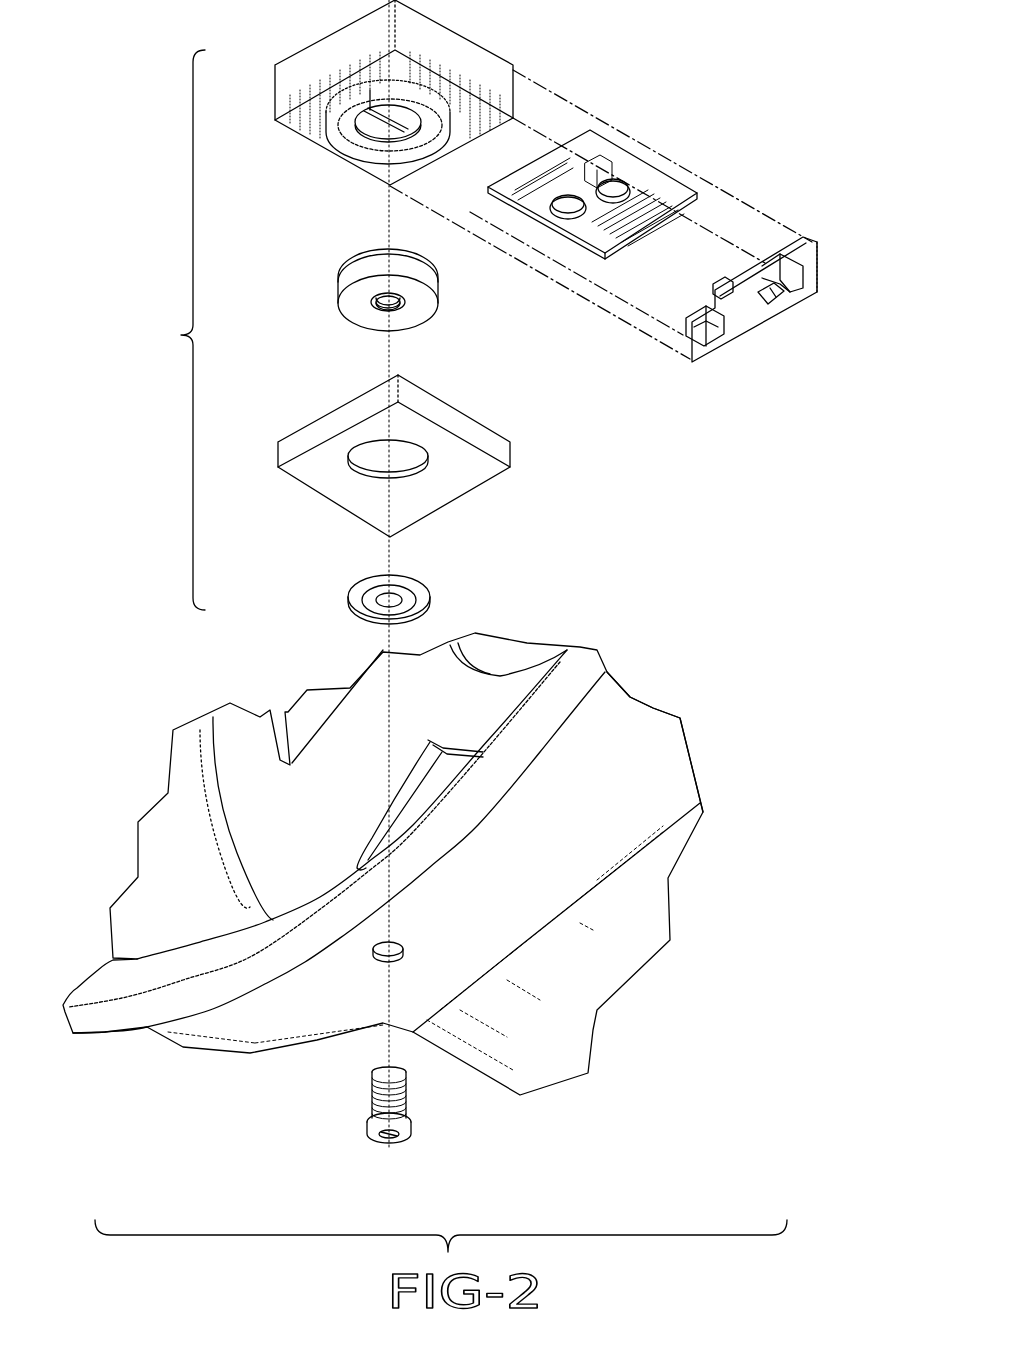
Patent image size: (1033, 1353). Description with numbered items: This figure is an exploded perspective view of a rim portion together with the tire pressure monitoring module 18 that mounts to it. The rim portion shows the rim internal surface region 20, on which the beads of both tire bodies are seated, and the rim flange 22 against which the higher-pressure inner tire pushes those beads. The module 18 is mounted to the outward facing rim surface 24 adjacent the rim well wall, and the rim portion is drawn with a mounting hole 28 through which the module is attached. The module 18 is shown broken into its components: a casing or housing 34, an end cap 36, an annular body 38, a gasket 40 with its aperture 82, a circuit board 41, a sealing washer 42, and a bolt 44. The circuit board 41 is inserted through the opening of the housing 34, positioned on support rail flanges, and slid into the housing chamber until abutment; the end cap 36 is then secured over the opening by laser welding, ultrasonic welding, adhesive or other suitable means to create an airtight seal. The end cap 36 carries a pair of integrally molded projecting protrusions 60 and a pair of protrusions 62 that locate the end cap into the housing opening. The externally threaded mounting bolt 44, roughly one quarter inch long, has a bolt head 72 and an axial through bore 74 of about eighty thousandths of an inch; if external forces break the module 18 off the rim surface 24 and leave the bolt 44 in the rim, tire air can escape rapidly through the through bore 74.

The tire pressure monitoring module 18 is at (172, 333).
The rim internal surface region 20 is at (585, 897).
The rim flange 22 is at (577, 675).
The outward facing rim surface 24 is at (630, 745).
The mounting hole 28 is at (400, 957).
The housing 34 is at (332, 46).
The end cap 36 is at (757, 323).
The annular body 38 is at (413, 312).
The gasket 40 is at (350, 412).
The circuit board 41 is at (622, 148).
The sealing washer 42 is at (357, 601).
The bolt 44 is at (372, 1098).
The protrusions 60 is at (712, 328).
The protrusions 62 is at (768, 252).
The bolt head 72 is at (402, 1140).
The axial through bore 74 is at (383, 1148).
The aperture 82 is at (365, 468).